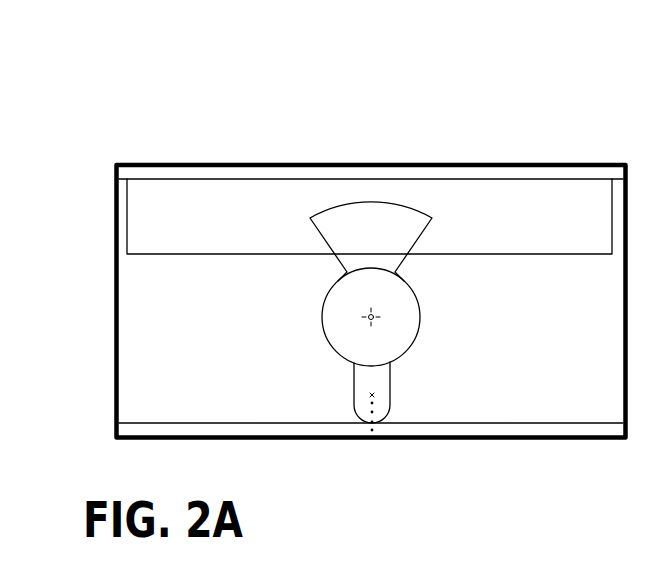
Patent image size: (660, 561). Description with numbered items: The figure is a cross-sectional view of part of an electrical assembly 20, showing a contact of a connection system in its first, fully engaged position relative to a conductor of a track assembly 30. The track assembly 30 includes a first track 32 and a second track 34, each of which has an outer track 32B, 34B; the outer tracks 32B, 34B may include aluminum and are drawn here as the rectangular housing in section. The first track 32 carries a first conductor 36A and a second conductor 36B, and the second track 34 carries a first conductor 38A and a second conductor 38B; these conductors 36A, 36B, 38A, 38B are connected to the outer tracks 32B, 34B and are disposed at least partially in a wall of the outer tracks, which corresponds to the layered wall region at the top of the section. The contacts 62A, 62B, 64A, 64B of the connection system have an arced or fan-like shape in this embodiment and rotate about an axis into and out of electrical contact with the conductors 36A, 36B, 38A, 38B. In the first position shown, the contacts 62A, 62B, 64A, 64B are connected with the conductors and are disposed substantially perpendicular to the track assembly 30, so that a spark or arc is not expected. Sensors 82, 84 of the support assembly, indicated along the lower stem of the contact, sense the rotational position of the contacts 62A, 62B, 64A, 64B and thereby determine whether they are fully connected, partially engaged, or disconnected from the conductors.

The electrical assembly 20 is at (166, 111).
The track assembly 30 is at (590, 155).
The first track 32 is at (371, 274).
The second track 34 is at (478, 163).
The outer track 32B is at (369, 179).
The outer track 34B is at (345, 175).
The first conductor 36A is at (371, 233).
The second conductor 36B is at (371, 233).
The first conductor 38A is at (371, 233).
The second conductor 38B is at (232, 179).
The contact 62A is at (421, 204).
The contact 62B is at (421, 204).
The contact 64A is at (421, 204).
The contact 64B is at (380, 202).
The sensor 82 is at (437, 424).
The sensor 84 is at (373, 405).